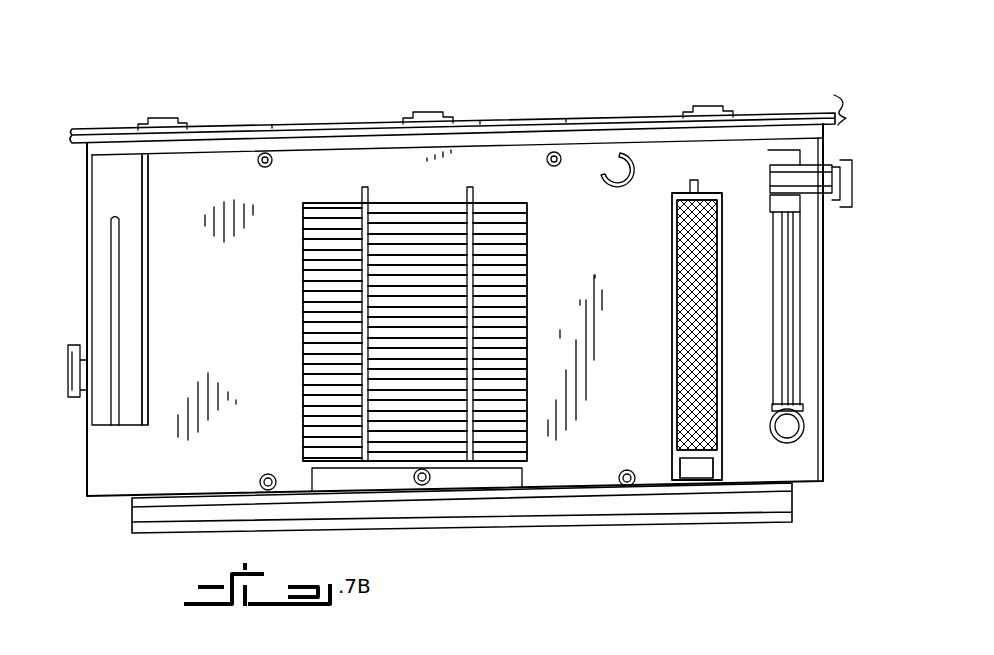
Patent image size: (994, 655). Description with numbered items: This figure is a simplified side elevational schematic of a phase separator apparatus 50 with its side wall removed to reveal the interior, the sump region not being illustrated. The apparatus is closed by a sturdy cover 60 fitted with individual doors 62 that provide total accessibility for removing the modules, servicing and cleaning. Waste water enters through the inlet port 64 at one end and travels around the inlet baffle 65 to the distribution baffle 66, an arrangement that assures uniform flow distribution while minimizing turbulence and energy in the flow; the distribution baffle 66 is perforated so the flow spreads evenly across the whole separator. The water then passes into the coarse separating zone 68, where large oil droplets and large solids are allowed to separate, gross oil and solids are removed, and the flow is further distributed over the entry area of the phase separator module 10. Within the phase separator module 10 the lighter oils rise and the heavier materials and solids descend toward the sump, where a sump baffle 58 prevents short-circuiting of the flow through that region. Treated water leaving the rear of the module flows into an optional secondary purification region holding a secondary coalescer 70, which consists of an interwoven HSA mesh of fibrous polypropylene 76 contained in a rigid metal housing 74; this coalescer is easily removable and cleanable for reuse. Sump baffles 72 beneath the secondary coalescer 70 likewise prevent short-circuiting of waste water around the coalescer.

The phase separator apparatus 50 is at (78, 102).
The phase separator module 10 is at (391, 216).
The sump baffle 58 is at (330, 470).
The cover 60 is at (861, 106).
The door 62 is at (505, 118).
The inlet port 64 is at (72, 357).
The inlet baffle 65 is at (111, 222).
The distribution baffle 66 is at (148, 208).
The coarse separating zone 68 is at (234, 330).
The secondary coalescer 70 is at (711, 194).
The sump baffle 72 is at (683, 481).
The rigid metal housing 74 is at (722, 312).
The interwoven HSA mesh of fibrous polypropylene 76 is at (718, 390).